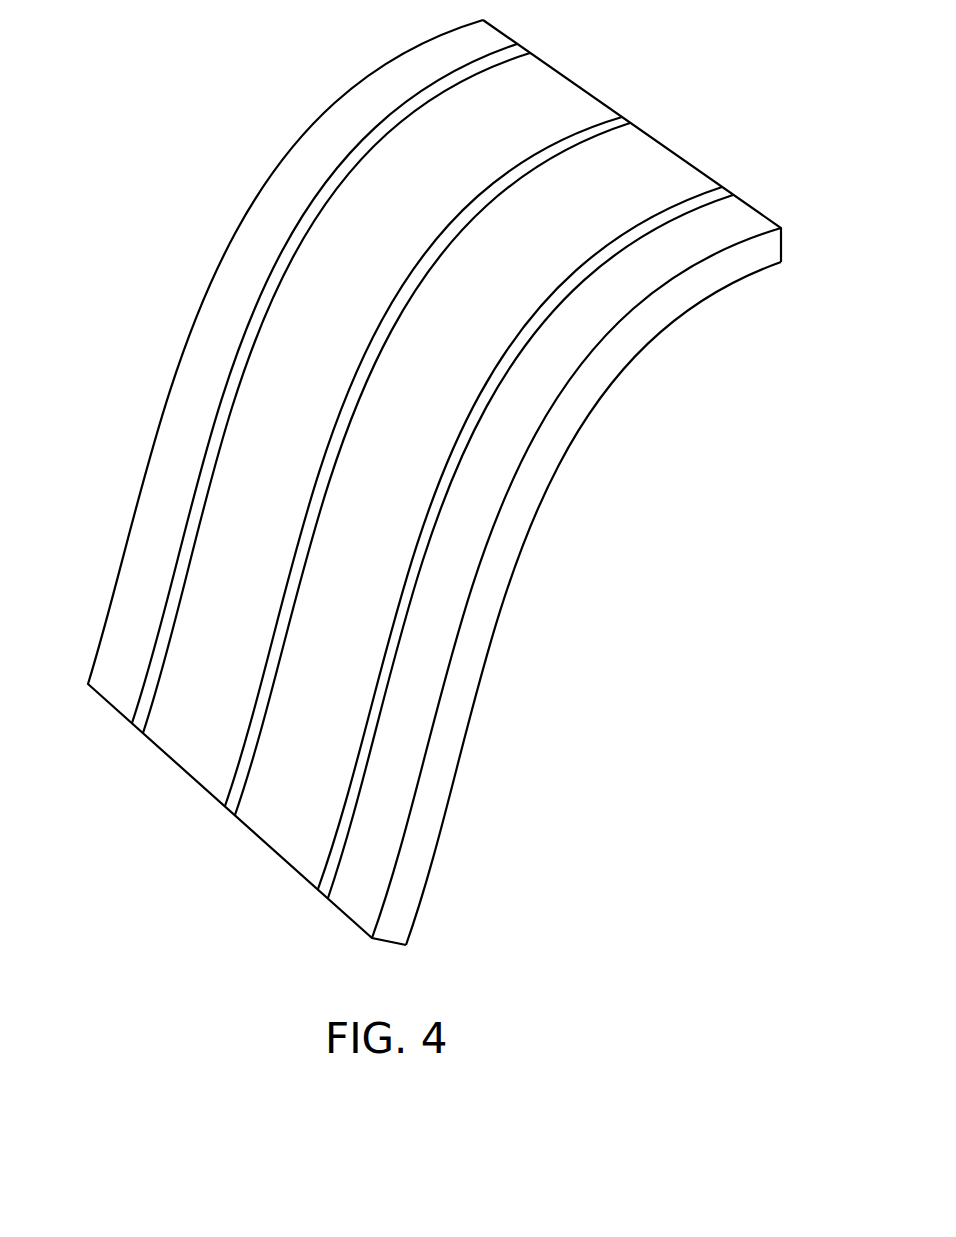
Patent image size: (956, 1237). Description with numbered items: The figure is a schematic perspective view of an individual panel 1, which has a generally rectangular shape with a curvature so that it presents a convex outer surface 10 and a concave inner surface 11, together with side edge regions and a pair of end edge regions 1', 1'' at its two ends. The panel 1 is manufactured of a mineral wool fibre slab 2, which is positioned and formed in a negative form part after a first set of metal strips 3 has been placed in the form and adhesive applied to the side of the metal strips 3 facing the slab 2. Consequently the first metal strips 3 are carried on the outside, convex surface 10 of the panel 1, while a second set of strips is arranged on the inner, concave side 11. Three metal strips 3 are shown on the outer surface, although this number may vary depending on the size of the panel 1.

The panel 1 is at (434, 482).
The end edge region 1' is at (632, 141).
The end edge region 1'' is at (247, 814).
The convex outer surface 10 is at (297, 318).
The concave inner surface 11 is at (622, 412).
The mineral wool fibre slab 2 is at (647, 320).
The first metal strips 3 is at (188, 530).